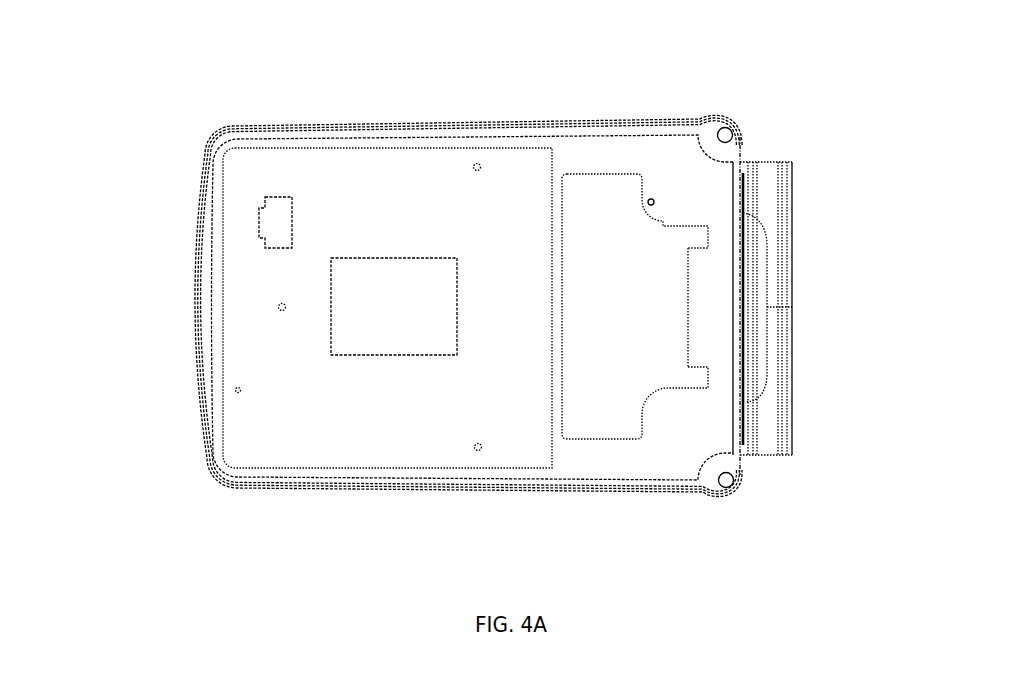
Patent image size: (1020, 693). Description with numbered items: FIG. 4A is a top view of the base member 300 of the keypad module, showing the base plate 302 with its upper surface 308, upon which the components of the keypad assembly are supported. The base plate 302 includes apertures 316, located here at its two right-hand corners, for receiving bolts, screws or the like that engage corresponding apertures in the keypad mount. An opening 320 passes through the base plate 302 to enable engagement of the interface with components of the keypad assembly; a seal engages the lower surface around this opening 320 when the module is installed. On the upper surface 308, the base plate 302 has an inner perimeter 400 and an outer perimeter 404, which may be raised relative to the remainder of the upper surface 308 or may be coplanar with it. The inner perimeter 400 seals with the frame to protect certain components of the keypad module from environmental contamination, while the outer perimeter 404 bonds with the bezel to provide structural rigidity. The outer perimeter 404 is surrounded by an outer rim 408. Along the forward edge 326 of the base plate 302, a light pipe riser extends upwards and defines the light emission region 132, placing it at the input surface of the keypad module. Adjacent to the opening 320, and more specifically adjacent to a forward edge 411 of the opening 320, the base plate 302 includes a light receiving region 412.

The base member 300 is at (152, 293).
The base plate 302 is at (206, 484).
The upper surface 308 is at (435, 407).
The apertures 316 is at (727, 135).
The opening 320 is at (635, 315).
The forward edge 326 is at (740, 465).
The light emission region 132 is at (760, 268).
The inner perimeter 400 is at (348, 145).
The outer perimeter 404 is at (285, 132).
The outer rim 408 is at (207, 212).
The forward edge of the opening 411 is at (690, 293).
The light receiving region 412 is at (697, 305).